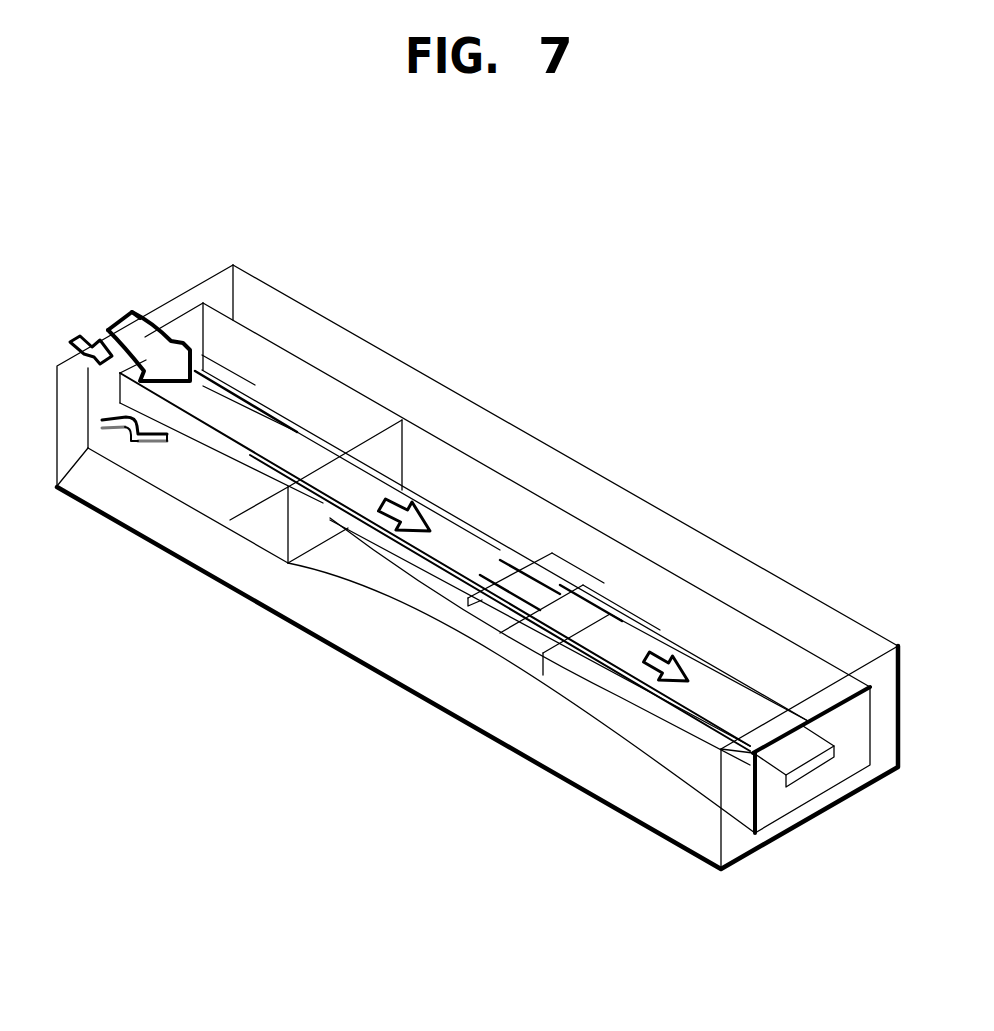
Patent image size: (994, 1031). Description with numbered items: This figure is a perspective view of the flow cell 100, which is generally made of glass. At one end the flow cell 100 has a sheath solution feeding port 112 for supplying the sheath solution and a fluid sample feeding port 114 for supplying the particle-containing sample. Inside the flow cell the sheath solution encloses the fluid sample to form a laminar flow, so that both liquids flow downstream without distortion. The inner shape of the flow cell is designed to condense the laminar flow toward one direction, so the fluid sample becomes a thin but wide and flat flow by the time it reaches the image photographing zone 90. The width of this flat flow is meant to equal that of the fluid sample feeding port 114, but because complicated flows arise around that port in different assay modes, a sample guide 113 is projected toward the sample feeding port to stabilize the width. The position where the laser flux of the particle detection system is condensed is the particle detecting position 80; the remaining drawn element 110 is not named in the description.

The flow cell 100 is at (403, 372).
The guide member 110 is at (408, 513).
The sheath solution feeding port 112 is at (137, 312).
The sample guide 113 is at (178, 437).
The fluid sample feeding port 114 is at (202, 371).
The particle detecting position 80 is at (550, 553).
The image photographing zone 90 is at (583, 585).